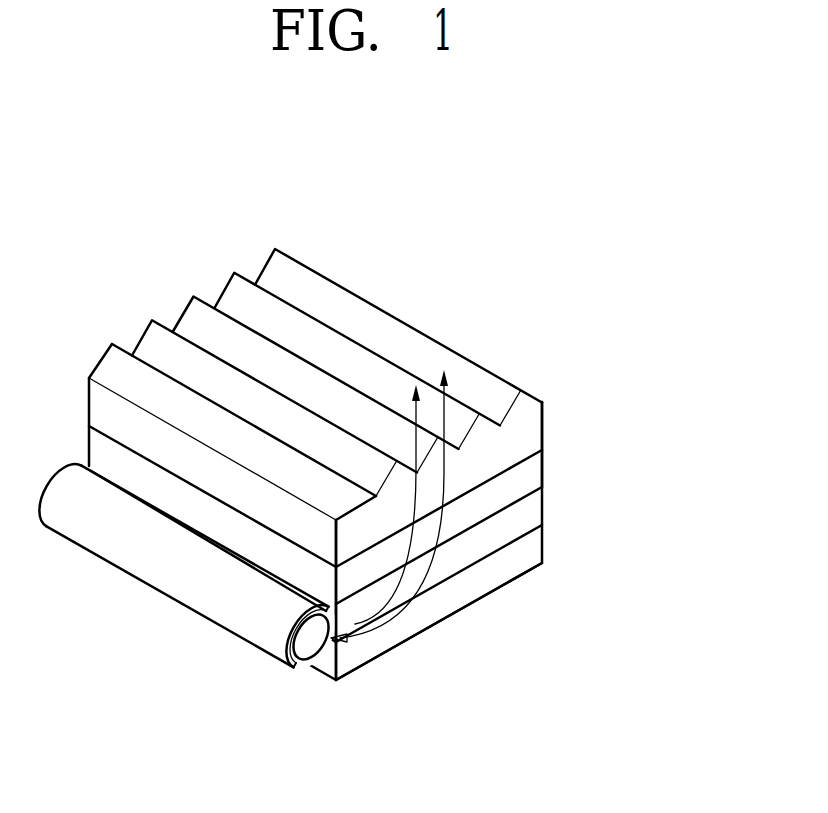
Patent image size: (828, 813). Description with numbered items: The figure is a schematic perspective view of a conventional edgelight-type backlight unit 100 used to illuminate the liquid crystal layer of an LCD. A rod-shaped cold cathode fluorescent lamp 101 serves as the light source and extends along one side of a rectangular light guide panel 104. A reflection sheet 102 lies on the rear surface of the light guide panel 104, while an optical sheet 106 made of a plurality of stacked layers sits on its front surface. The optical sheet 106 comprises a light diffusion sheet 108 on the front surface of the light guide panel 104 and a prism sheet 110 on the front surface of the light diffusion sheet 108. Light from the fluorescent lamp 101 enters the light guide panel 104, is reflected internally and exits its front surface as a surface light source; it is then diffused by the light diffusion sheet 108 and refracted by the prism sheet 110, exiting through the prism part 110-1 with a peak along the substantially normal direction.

The backlight unit 100 is at (140, 285).
The cold cathode fluorescent lamp 101 is at (310, 628).
The reflection sheet 102 is at (523, 552).
The light guide panel 104 is at (523, 513).
The optical sheet 106 is at (660, 366).
The light diffusion sheet 108 is at (523, 475).
The prism sheet 110 is at (523, 437).
The prism part 110-1 is at (395, 340).